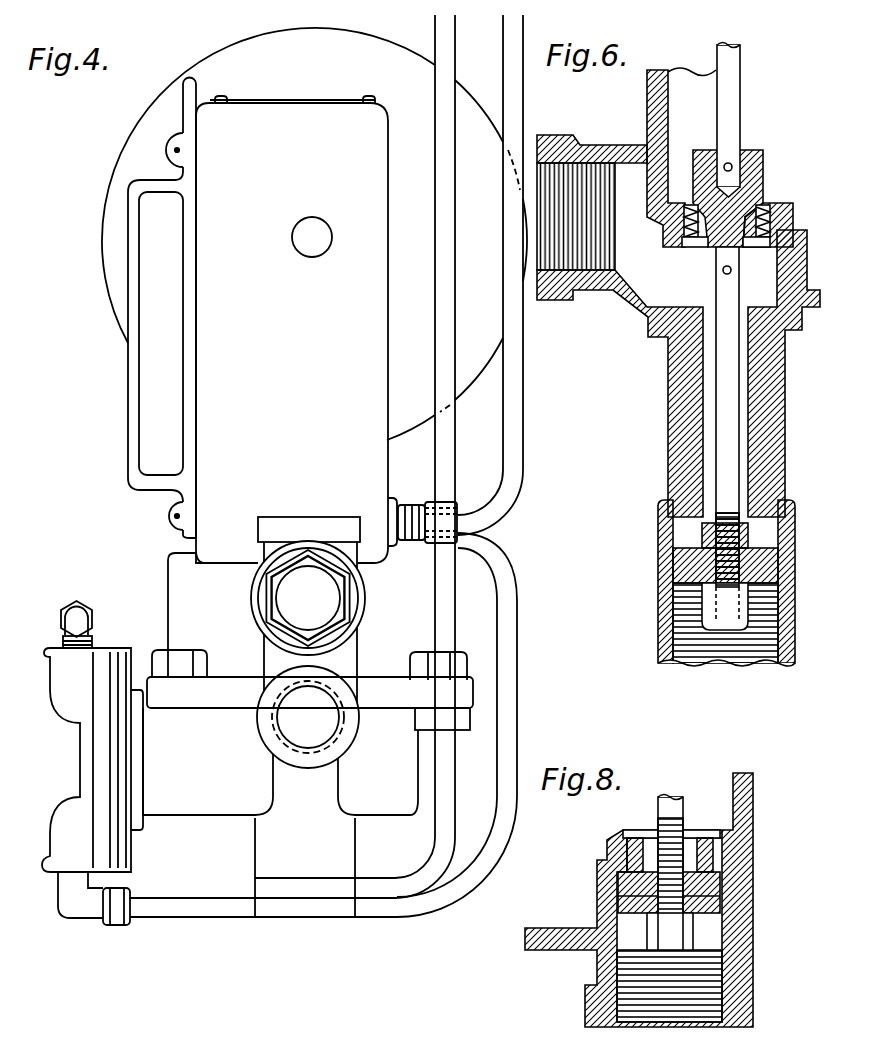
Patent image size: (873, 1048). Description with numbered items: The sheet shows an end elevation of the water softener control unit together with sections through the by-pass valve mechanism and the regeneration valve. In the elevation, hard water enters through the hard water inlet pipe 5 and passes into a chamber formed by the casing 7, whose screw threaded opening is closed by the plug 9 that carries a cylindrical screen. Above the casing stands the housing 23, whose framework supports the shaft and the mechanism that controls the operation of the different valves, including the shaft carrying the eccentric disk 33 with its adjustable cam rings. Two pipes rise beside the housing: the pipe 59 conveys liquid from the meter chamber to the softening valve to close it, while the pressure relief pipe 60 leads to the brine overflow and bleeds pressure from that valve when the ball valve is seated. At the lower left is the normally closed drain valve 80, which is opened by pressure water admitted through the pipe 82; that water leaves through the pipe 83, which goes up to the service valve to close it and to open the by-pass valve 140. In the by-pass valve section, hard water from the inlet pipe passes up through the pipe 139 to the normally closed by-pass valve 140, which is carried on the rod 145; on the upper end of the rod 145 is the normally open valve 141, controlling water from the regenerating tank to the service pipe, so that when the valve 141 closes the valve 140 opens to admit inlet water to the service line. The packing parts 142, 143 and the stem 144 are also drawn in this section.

In FIG. 4, the hard water inlet pipe 5 is at (275, 722).
In FIG. 4, the casing 7 is at (267, 552).
In FIG. 4, the plug 9 is at (270, 600).
In FIG. 4, the housing 23 is at (207, 366).
In FIG. 4, the eccentric disk 33 is at (140, 298).
In FIG. 4, the pipe 59 is at (513, 583).
In FIG. 4, the pressure relief pipe 60 is at (510, 478).
In FIG. 4, the drain valve 80 is at (83, 752).
In FIG. 4, the pipe 82 is at (60, 620).
In FIG. 4, the pipe 83 is at (208, 908).
In FIG. 6, the pipe 139 is at (656, 622).
In FIG. 6, the by-pass valve 140 is at (672, 577).
In FIG. 6, the valve 141 is at (743, 150).
In FIG. 6, the packing 142 is at (765, 200).
In FIG. 6, the gland follower 143 is at (786, 228).
In FIG. 6, the valve stem 144 is at (787, 90).
In FIG. 6, the rod 145 is at (722, 363).